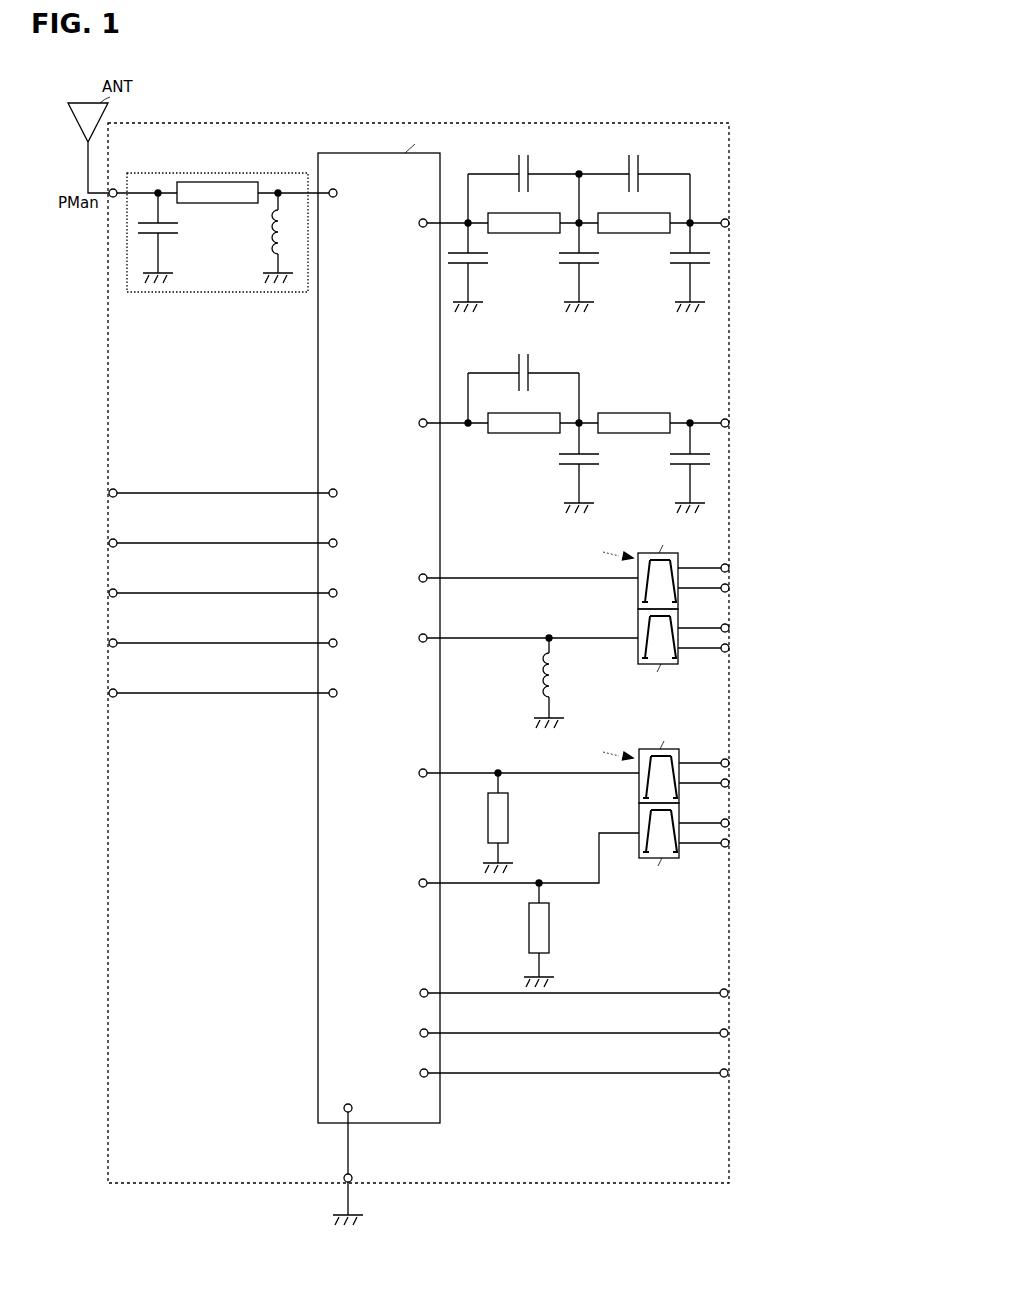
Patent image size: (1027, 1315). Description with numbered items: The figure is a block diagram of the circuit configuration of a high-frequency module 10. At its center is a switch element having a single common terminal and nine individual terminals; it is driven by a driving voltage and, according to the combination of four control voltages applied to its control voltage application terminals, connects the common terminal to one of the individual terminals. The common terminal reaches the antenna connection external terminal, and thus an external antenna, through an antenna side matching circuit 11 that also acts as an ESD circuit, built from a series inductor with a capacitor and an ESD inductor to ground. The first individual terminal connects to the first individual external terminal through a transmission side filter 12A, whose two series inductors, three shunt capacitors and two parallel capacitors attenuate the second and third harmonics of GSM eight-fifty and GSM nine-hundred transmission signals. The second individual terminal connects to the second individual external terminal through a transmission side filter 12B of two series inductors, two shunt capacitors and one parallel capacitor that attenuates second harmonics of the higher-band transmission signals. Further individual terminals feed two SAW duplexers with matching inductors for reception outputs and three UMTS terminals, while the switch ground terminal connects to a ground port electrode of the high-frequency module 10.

The high-frequency module 10 is at (702, 122).
The antenna side matching circuit 11 is at (275, 176).
The transmission side filter 12A is at (680, 153).
The transmission side filter 12B is at (662, 370).